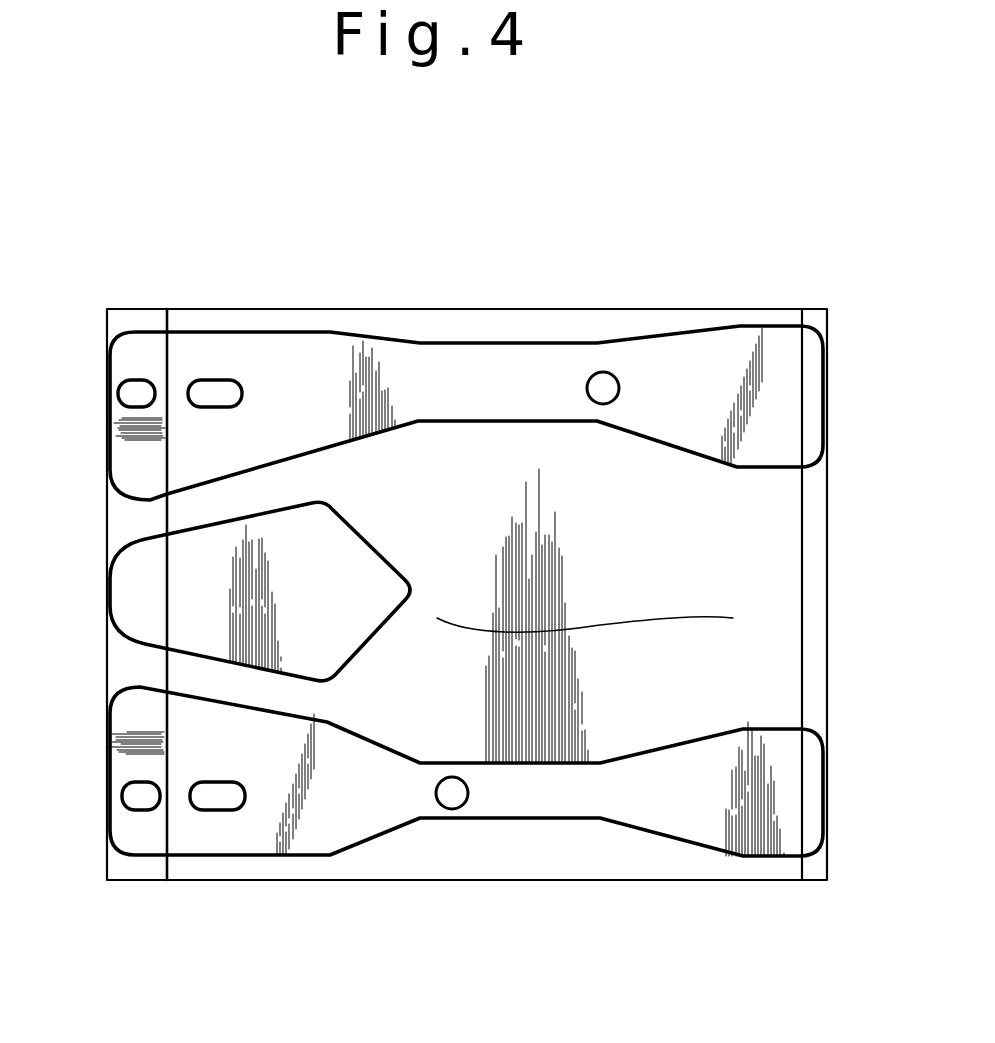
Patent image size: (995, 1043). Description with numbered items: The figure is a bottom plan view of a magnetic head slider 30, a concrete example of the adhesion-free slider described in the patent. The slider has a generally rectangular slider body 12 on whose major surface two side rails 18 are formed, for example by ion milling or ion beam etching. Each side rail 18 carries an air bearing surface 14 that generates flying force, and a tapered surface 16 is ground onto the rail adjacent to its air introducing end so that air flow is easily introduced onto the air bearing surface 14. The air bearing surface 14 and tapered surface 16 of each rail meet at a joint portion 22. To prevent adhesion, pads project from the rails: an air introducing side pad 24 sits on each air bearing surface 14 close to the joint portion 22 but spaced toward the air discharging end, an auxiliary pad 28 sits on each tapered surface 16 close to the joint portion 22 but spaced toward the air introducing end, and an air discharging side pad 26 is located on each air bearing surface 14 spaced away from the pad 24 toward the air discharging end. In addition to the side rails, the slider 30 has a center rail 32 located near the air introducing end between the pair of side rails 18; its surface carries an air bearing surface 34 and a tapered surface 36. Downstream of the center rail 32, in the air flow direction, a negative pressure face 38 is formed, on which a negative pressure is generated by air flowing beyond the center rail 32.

The slider body 12 is at (587, 309).
The air bearing surface 14 is at (292, 365).
The tapered surface 16 is at (125, 455).
The side rail 18 is at (502, 340).
The joint portion 22 is at (165, 352).
The air introducing side pad 24 is at (215, 388).
The air discharging side pad 26 is at (607, 385).
The auxiliary pad 28 is at (126, 390).
The magnetic head slider 30 is at (435, 269).
The center rail 32 is at (185, 523).
The air bearing surface of center rail 34 is at (193, 618).
The tapered surface of center rail 36 is at (128, 598).
The negative pressure face 38 is at (733, 618).